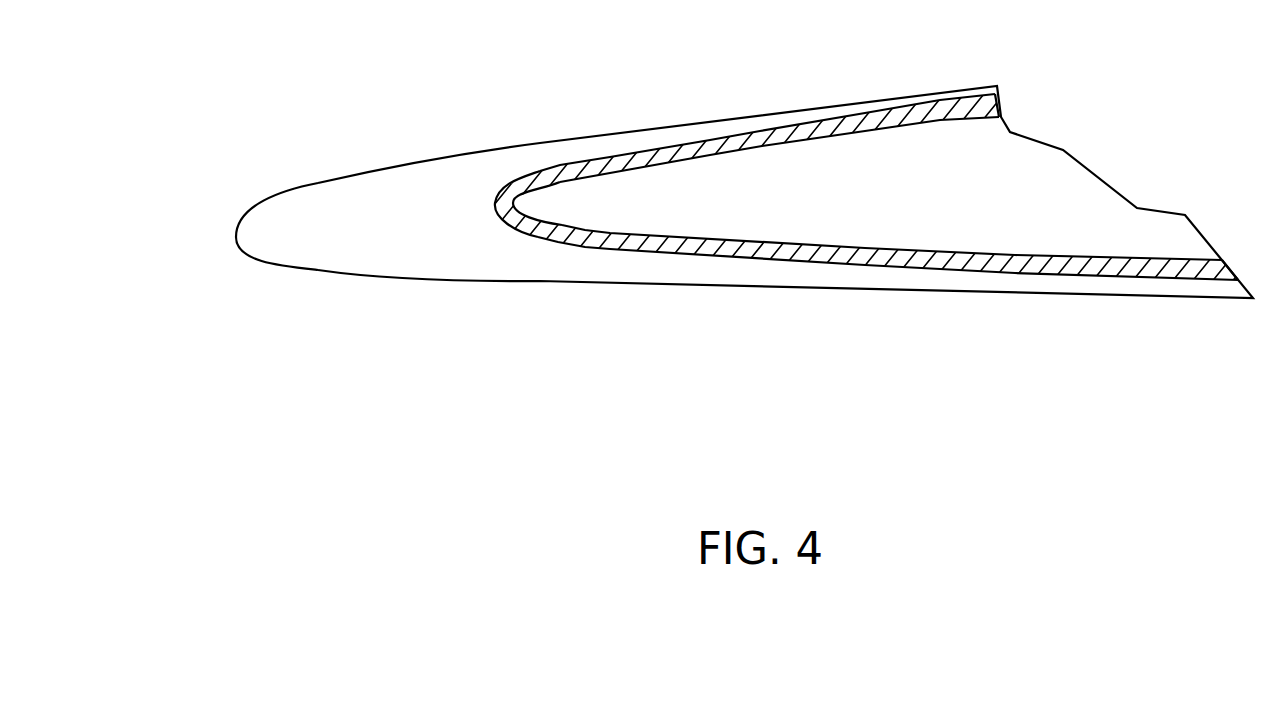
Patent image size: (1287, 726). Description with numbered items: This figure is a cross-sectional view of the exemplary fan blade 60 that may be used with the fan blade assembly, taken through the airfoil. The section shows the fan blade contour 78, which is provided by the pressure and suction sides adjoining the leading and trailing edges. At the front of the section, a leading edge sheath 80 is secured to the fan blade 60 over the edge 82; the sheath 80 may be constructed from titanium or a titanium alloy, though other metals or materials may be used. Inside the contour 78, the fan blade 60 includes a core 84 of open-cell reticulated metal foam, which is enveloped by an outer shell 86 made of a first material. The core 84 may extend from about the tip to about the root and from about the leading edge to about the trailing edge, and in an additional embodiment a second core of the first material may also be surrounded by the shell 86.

The fan blade 60 is at (737, 210).
The fan blade contour 78 is at (638, 127).
The leading edge sheath 80 is at (262, 187).
The edge 82 is at (493, 193).
The core 84 is at (925, 206).
The outer shell 86 is at (762, 143).